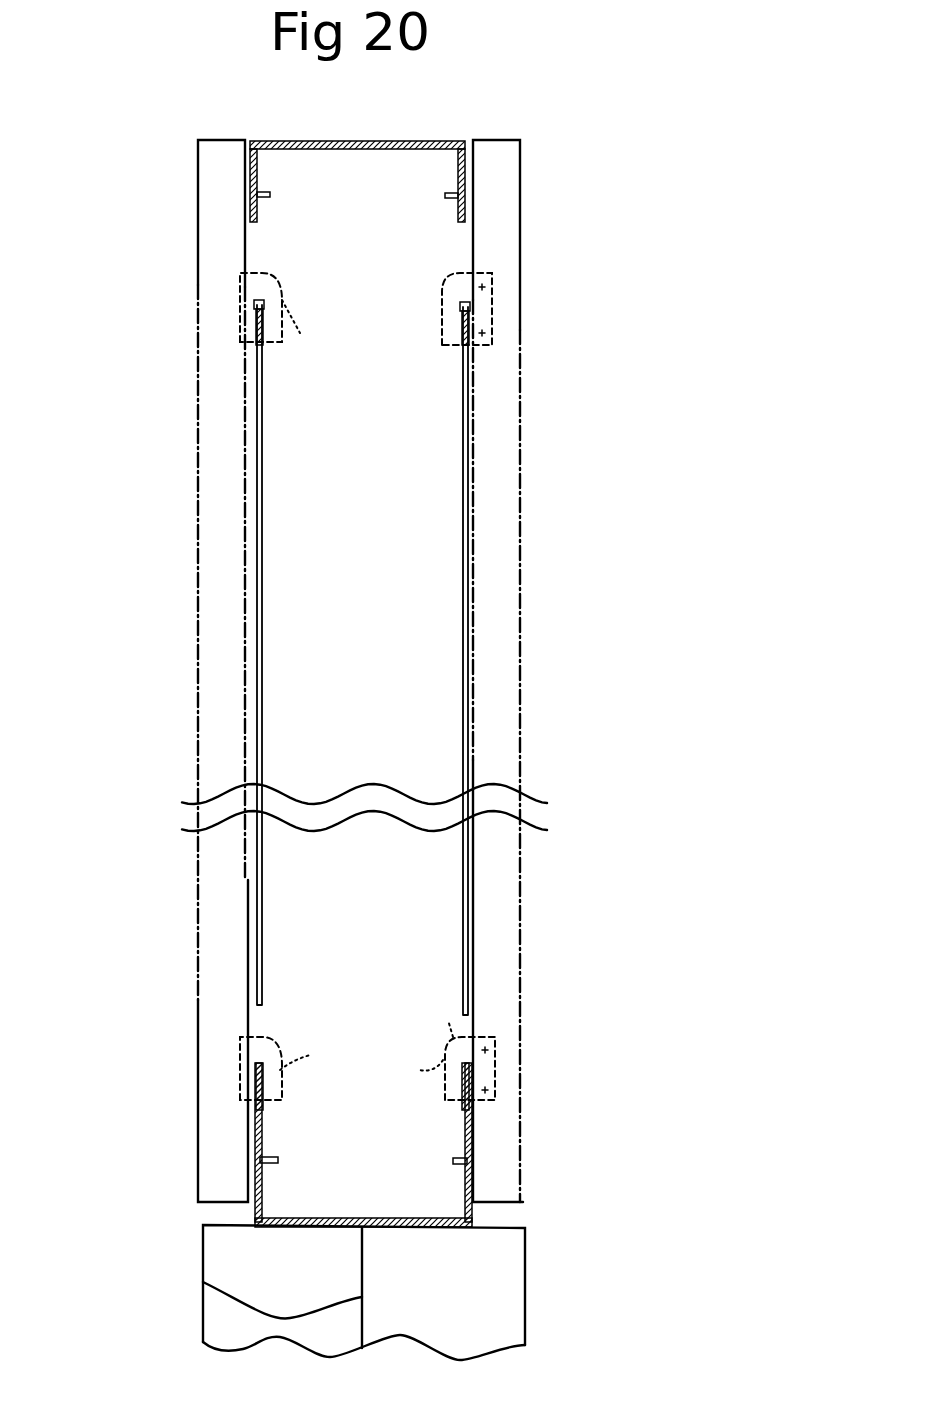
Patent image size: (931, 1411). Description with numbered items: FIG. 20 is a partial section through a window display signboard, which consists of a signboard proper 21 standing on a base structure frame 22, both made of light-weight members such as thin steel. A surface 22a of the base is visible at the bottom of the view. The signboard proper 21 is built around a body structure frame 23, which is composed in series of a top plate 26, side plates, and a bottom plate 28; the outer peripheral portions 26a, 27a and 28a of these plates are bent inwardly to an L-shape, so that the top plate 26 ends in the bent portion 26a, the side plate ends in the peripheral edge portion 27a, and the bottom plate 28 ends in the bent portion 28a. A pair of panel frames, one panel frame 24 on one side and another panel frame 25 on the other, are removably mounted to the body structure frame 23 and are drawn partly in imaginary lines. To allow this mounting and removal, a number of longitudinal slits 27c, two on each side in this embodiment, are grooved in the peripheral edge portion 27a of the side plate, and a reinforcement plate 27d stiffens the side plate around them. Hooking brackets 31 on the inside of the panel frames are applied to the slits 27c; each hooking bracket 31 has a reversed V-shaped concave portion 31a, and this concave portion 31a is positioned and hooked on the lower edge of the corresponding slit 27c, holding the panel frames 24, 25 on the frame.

The signboard proper 21 is at (583, 210).
The base structure frame 22 is at (356, 1292).
The base surface 22a is at (203, 1282).
The body structure frame 23 is at (358, 148).
The panel frame 24 is at (508, 355).
The other panel frame 25 is at (200, 375).
The top plate 26 is at (382, 150).
The outer peripheral portion of top plate 26a is at (255, 167).
The outer peripheral portion of side plate 27a is at (462, 450).
The longitudinal slit 27c is at (245, 250).
The reinforcement plate 27d is at (260, 347).
The bottom plate 28 is at (363, 1145).
The outer peripheral portion of bottom plate 28a is at (463, 1200).
The hooking bracket 31 is at (453, 1037).
The reversed V-shaped concave portion 31a is at (443, 1060).